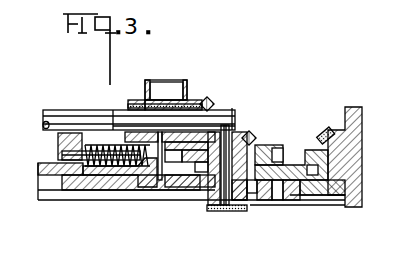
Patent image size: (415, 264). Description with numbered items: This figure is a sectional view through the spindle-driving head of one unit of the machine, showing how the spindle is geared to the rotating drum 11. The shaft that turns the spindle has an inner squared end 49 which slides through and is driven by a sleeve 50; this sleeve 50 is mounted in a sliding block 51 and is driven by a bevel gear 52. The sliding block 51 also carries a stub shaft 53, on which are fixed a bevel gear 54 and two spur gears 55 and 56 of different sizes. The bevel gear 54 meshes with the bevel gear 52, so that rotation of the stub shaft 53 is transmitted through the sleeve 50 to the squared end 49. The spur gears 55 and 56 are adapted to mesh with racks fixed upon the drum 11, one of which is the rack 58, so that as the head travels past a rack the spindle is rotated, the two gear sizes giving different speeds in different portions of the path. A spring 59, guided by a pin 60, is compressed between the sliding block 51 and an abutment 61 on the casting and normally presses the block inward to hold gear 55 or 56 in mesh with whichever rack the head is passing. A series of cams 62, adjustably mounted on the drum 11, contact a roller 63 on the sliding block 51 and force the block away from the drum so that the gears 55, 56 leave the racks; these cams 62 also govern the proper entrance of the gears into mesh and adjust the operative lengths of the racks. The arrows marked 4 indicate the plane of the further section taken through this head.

The section line 4 is at (172, 158).
The drum 11 is at (362, 108).
The inner squared end 49 is at (222, 117).
The sleeve 50 is at (128, 109).
The sliding block 51 is at (184, 97).
The bevel gear 52 is at (209, 102).
The stub shaft 53 is at (232, 138).
The bevel gear 54 is at (248, 147).
The spur gear 55 is at (266, 146).
The spur gear 56 is at (250, 206).
The rack 58 is at (274, 172).
The spring 59 is at (138, 146).
The pin 60 is at (117, 152).
The abutment 61 is at (58, 145).
The cam 62 is at (315, 196).
The roller 63 is at (279, 200).